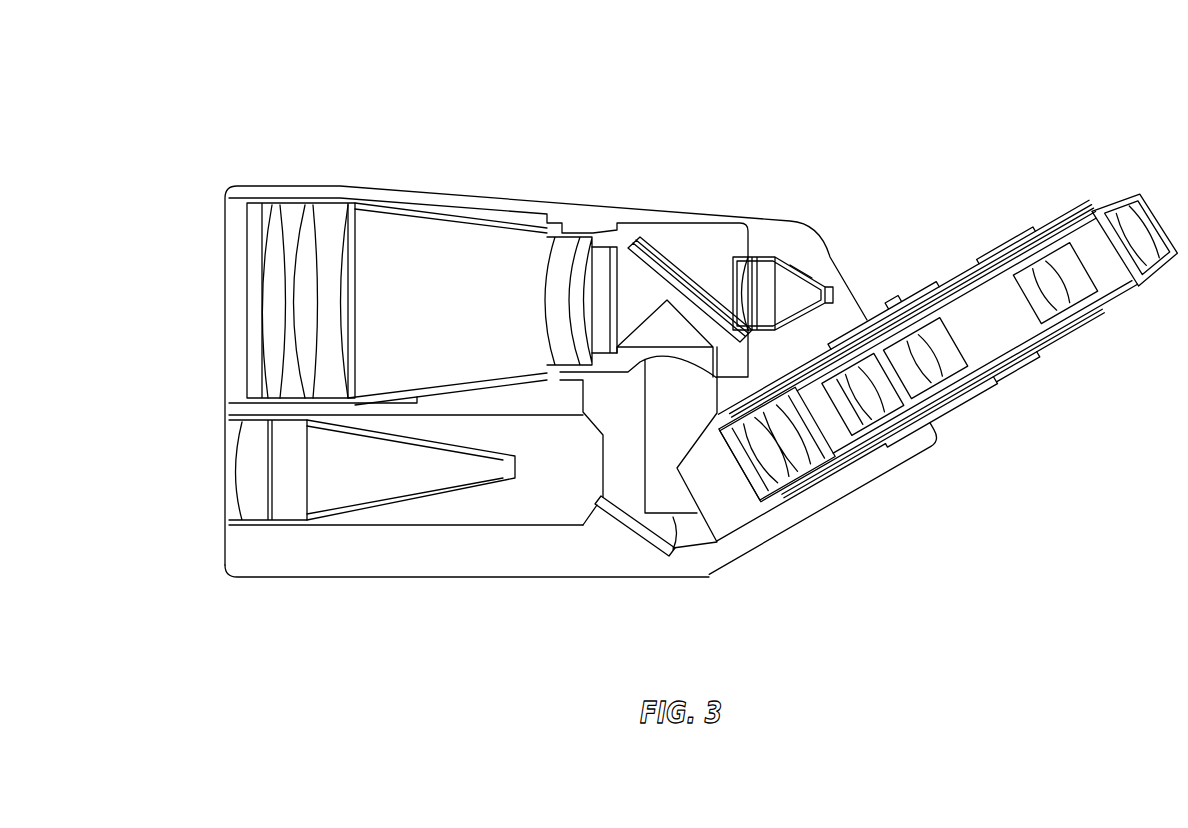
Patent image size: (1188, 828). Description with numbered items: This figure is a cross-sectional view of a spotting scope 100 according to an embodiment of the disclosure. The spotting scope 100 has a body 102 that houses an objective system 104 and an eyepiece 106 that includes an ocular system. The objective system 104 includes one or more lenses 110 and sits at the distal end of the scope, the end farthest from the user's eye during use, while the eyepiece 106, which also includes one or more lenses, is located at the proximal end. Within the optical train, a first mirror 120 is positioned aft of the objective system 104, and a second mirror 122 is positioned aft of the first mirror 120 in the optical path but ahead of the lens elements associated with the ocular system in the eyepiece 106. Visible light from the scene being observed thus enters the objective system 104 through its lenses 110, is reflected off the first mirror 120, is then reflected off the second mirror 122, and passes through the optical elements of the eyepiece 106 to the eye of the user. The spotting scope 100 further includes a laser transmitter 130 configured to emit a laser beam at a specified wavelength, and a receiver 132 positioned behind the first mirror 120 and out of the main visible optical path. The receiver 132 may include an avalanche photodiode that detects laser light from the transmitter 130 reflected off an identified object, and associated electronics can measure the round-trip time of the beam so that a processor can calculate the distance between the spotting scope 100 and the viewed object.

The spotting scope 100 is at (674, 345).
The body 102 is at (818, 225).
The objective system 104 is at (532, 362).
The eyepiece 106 is at (912, 338).
The lenses 110 is at (333, 207).
The first mirror 120 is at (640, 240).
The second mirror 122 is at (635, 540).
The laser transmitter 130 is at (493, 488).
The receiver 132 is at (812, 278).